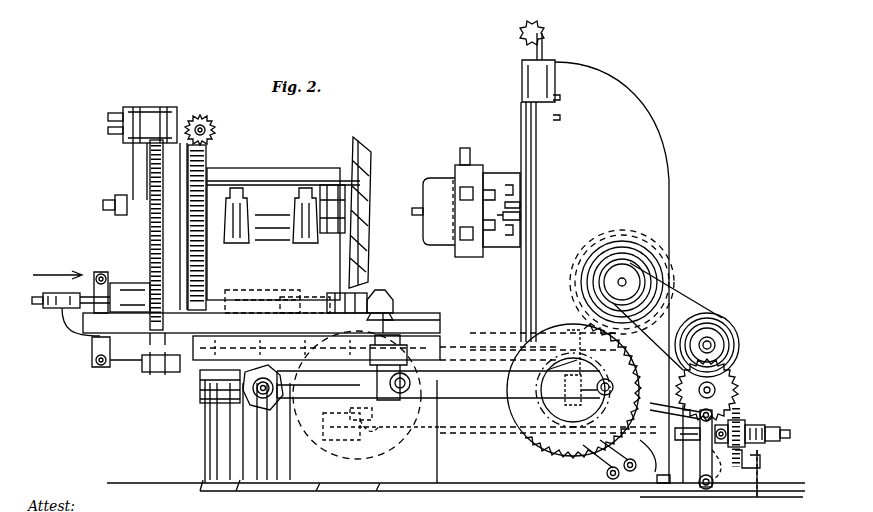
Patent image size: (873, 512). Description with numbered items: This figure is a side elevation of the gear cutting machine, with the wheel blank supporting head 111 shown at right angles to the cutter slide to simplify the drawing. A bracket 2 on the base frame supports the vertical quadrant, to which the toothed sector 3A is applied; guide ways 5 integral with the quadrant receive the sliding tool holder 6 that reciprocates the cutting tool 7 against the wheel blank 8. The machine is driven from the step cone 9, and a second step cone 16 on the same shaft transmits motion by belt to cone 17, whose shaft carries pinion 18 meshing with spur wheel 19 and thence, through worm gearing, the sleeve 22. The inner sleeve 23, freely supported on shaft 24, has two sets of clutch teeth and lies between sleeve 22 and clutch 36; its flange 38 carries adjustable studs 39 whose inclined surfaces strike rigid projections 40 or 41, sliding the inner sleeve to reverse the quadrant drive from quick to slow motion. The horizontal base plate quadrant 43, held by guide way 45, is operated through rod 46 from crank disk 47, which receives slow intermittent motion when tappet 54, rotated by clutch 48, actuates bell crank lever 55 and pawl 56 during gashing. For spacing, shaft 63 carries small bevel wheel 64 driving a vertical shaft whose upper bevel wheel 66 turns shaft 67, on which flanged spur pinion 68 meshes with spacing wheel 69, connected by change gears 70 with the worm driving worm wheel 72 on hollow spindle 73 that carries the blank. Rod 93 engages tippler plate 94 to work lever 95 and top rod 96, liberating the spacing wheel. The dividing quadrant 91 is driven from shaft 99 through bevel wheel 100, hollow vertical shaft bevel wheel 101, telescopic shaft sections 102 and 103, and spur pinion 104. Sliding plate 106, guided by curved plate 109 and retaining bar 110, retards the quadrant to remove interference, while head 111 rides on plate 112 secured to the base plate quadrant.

The bracket 2 is at (612, 121).
The toothed sector 3A is at (521, 298).
The guide ways 5 is at (501, 203).
The sliding tool holder 6 is at (453, 202).
The cutting tool 7 is at (415, 220).
The wheel blank 8 is at (362, 207).
The step cone 9 is at (670, 279).
The step cone 16 is at (640, 268).
The cone 17 is at (735, 344).
The pinion 18 is at (673, 441).
The spur wheel 19 is at (736, 378).
The sleeve 22 is at (681, 446).
The inner sleeve 23 is at (762, 423).
The shaft 24 is at (792, 437).
The clutch 36 is at (773, 427).
The flange 38 is at (742, 414).
The adjustable stud 39 is at (736, 406).
The rigid projection 40 is at (757, 469).
The rigid projection 41 is at (718, 470).
The base plate quadrant 43 is at (437, 346).
The guide way 45 is at (190, 380).
The rod 46 is at (746, 501).
The crank disk 47 is at (541, 441).
The clutch 48 is at (622, 455).
The tappet 54 is at (583, 390).
The bell crank lever 55 is at (567, 380).
The pawl 56 is at (521, 338).
The shaft 63 is at (396, 441).
The small bevel wheel 64 is at (387, 426).
The small bevel wheel 66 is at (391, 316).
The shaft 67 is at (115, 297).
The flanged spur pinion 68 is at (261, 323).
The spacing wheel 69 is at (150, 252).
The change gears 70 is at (124, 112).
The worm wheel 72 is at (203, 150).
The hollow spindle 73 is at (343, 188).
The dividing quadrant 91 is at (218, 183).
The rod 93 is at (136, 360).
The tippler plate 94 is at (242, 393).
The lever 95 is at (66, 326).
The top rod 96 is at (112, 286).
The shaft 99 is at (496, 427).
The bevel wheel 100 is at (365, 441).
The bevel wheel 101 is at (411, 325).
The telescopic shaft section 102 is at (332, 293).
The telescopic shaft section 103 is at (261, 291).
The spur pinion 104 is at (512, 247).
The plate 106 is at (520, 205).
The curved plate 109 is at (525, 126).
The retaining bar 110 is at (521, 216).
The supporting head 111 is at (273, 234).
The plate 112 is at (425, 320).